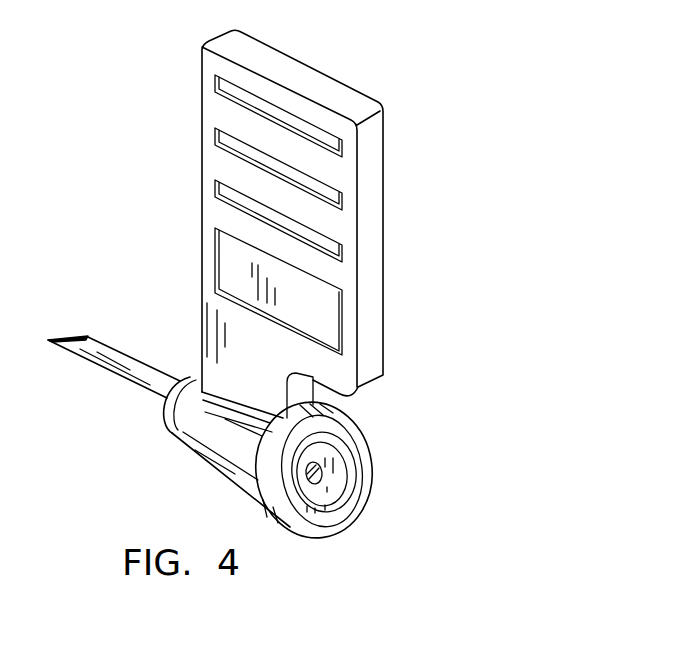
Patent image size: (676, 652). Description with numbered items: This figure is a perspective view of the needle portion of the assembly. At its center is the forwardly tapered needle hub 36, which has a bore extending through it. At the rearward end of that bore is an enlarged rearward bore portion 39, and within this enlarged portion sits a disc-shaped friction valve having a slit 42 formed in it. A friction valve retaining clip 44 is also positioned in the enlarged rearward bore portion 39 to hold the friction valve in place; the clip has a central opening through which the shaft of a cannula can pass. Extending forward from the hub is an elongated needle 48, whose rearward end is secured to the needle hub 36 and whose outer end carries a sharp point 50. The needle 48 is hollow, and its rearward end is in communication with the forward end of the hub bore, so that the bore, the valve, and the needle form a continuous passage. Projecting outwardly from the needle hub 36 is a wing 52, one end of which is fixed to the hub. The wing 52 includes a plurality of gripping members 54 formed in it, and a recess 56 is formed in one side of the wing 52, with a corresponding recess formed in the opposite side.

The needle hub 36 is at (188, 470).
The enlarged rearward bore portion 39 is at (333, 503).
The slit 42 is at (312, 475).
The friction valve retaining clip 44 is at (343, 445).
The needle 48 is at (142, 398).
The sharp point 50 is at (67, 337).
The wing 52 is at (398, 110).
The gripping members 54 is at (333, 195).
The recess 56 is at (328, 312).